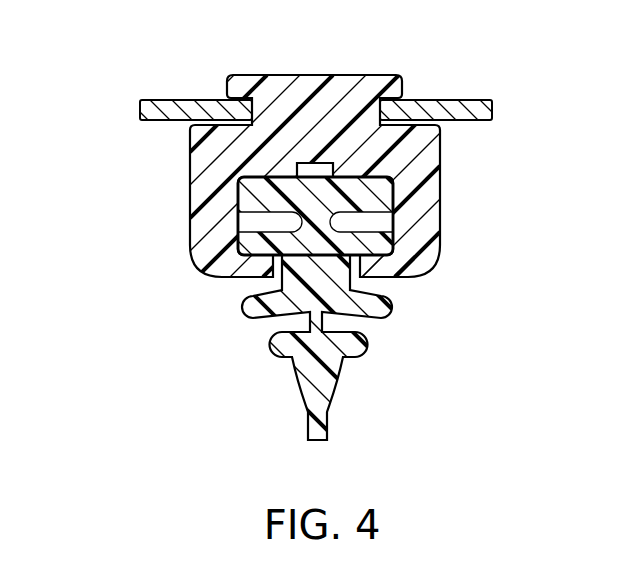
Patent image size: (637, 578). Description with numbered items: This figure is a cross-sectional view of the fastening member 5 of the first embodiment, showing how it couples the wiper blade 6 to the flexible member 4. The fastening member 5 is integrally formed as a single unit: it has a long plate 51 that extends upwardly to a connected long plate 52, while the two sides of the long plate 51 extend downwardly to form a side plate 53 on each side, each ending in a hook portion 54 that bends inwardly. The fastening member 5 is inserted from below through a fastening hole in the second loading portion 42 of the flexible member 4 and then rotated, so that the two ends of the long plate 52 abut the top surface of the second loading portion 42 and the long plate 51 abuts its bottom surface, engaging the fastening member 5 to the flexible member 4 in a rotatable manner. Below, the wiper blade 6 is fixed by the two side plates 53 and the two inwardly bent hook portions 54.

The flexible member 4 is at (458, 91).
The second loading portion 42 is at (430, 100).
The fastening member 5 is at (186, 263).
The long plate 51 is at (313, 142).
The long plate 52 is at (283, 82).
The side plate 53 is at (413, 203).
The hook portion 54 is at (375, 265).
The wiper blade 6 is at (242, 323).